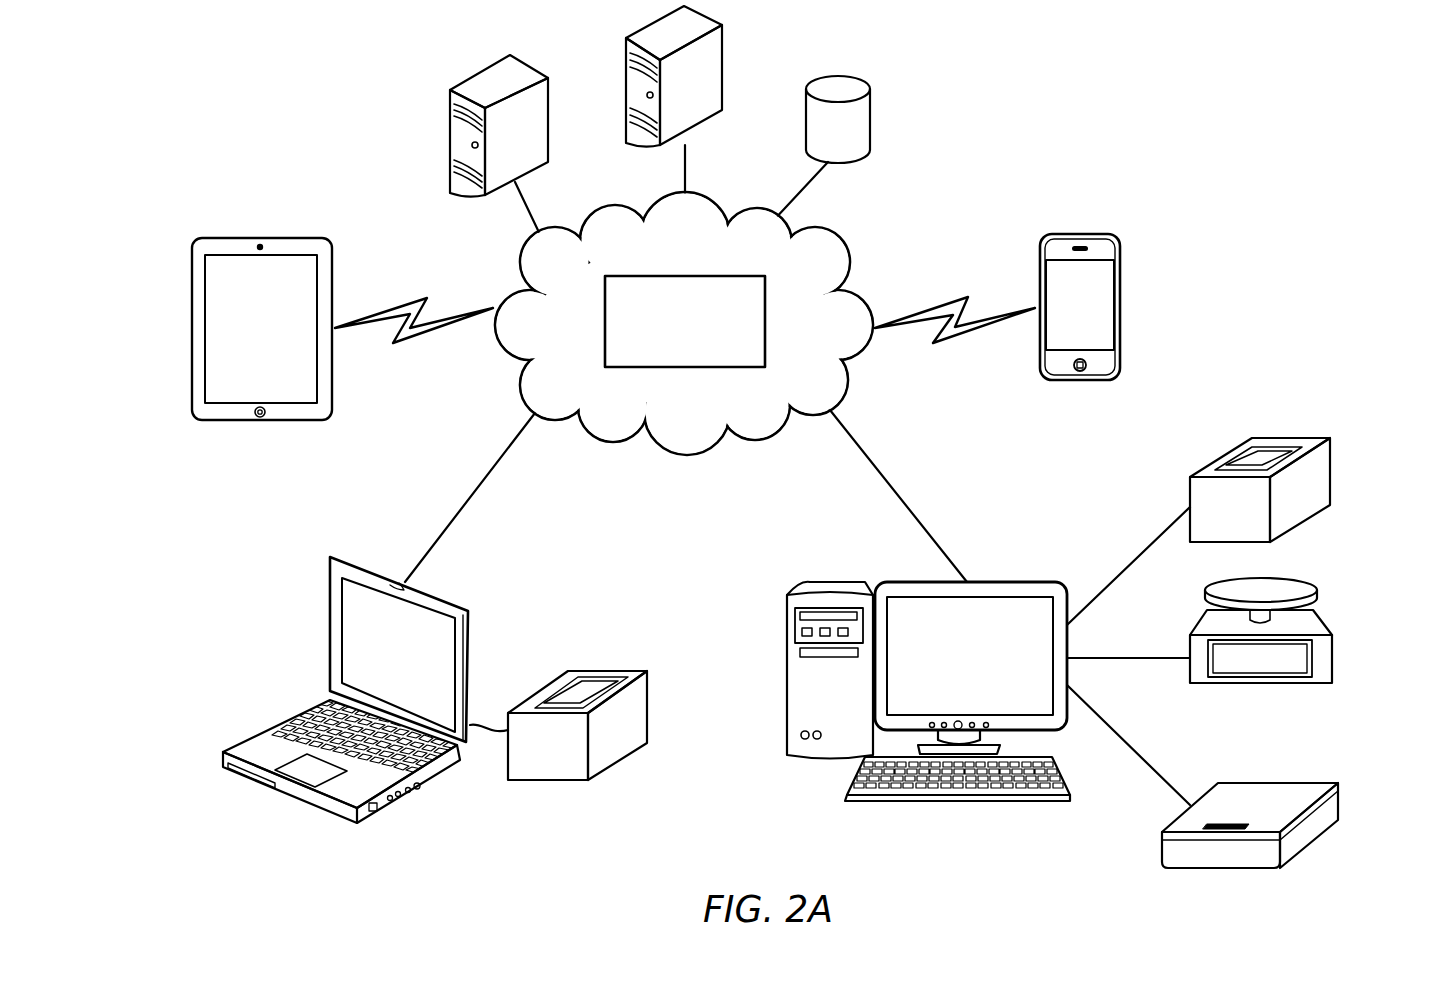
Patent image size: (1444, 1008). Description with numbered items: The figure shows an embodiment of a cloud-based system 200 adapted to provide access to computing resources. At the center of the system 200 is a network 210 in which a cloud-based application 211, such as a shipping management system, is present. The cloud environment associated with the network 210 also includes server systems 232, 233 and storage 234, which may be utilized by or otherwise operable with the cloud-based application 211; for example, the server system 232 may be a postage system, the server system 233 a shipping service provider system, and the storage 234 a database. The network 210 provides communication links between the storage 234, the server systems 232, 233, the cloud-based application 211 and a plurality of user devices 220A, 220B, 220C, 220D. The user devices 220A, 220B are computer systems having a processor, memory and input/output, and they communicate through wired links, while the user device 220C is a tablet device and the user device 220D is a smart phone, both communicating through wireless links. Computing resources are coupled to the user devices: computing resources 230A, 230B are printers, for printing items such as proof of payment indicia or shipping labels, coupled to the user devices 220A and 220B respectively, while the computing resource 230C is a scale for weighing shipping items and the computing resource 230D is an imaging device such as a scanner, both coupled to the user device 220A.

The cloud-based system 200 is at (167, 129).
The network 210 is at (669, 254).
The cloud-based application 211 is at (669, 357).
The user device 220A is at (787, 627).
The user device 220B is at (328, 622).
The user device 220C is at (284, 342).
The user device 220D is at (1056, 317).
The computing resource 230A is at (1292, 435).
The computing resource 230B is at (550, 780).
The computing resource 230C is at (1332, 657).
The computing resource 230D is at (1280, 782).
The server system 232 is at (450, 133).
The server system 233 is at (722, 55).
The storage 234 is at (872, 118).